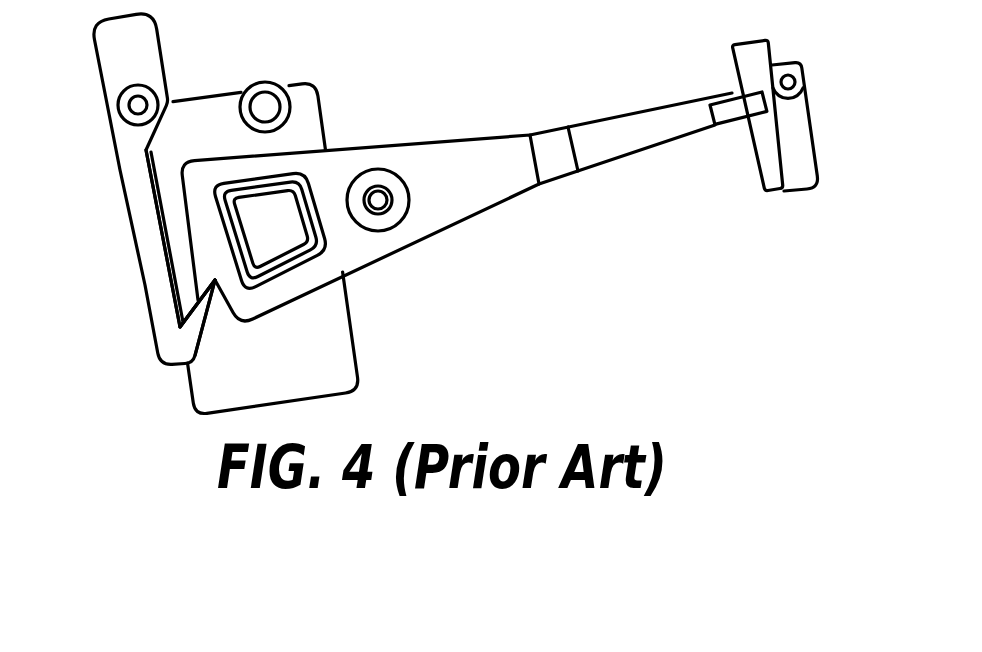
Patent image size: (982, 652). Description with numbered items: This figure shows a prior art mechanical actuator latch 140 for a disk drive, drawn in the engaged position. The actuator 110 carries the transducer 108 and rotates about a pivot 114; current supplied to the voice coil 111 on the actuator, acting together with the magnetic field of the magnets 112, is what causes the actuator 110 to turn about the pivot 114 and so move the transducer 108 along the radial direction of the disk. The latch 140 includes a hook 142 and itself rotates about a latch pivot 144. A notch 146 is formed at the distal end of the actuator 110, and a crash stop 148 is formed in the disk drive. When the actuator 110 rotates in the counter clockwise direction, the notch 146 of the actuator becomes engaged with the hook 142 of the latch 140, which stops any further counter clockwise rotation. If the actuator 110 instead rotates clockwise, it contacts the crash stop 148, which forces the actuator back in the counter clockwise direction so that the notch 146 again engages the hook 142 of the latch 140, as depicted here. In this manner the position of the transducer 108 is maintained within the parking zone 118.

The transducer 108 is at (733, 96).
The actuator 110 is at (470, 137).
The voice coil 111 is at (220, 180).
The magnets 112 is at (355, 329).
The pivot 114 is at (412, 200).
The parking zone 118 is at (758, 168).
The mechanical actuator latch 140 is at (112, 157).
The hook 142 is at (206, 333).
The latch pivot 144 is at (138, 83).
The notch 146 is at (196, 286).
The crash stop 148 is at (262, 80).